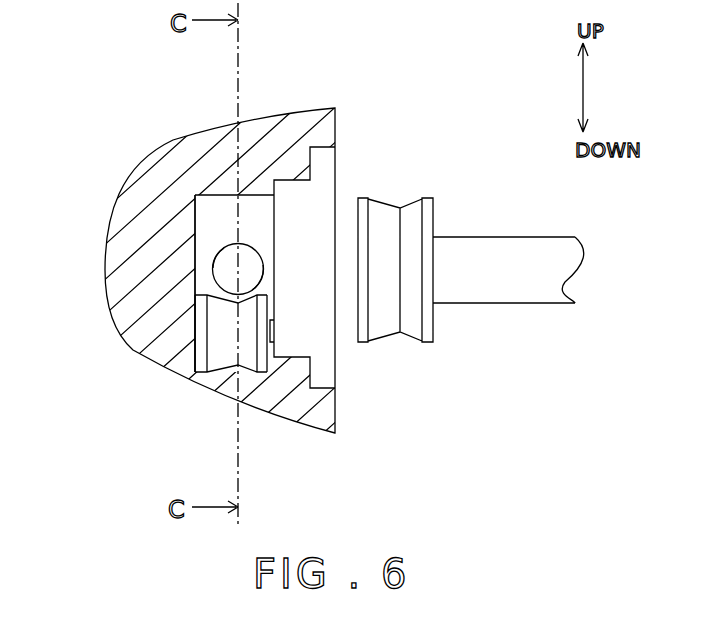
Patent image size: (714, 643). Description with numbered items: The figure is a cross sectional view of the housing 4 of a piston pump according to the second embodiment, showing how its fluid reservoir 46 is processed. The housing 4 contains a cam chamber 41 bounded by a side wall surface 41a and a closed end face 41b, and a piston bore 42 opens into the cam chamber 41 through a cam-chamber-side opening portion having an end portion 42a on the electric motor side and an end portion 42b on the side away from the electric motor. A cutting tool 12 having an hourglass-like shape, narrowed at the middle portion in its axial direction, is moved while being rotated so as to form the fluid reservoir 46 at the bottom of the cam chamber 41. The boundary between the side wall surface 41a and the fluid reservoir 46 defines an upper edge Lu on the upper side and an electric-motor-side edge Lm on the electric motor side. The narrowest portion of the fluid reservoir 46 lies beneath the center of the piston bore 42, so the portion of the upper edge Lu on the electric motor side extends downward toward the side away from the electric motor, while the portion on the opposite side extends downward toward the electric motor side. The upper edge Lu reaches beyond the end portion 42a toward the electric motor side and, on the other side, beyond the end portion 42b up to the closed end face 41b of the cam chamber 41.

The housing 4 is at (177, 130).
The cam chamber 41 is at (332, 239).
The side wall surface 41a is at (257, 222).
The closed end face 41b is at (194, 277).
The piston bore 42 is at (240, 245).
The end portion of the cam-chamber-side opening portion 42a is at (263, 262).
The end portion of the cam-chamber-side opening portion 42b is at (213, 268).
The fluid reservoir 46 is at (218, 348).
The cutting tool 12 is at (408, 228).
The upper edge Lu is at (195, 323).
The electric-motor-side edge Lm is at (274, 322).